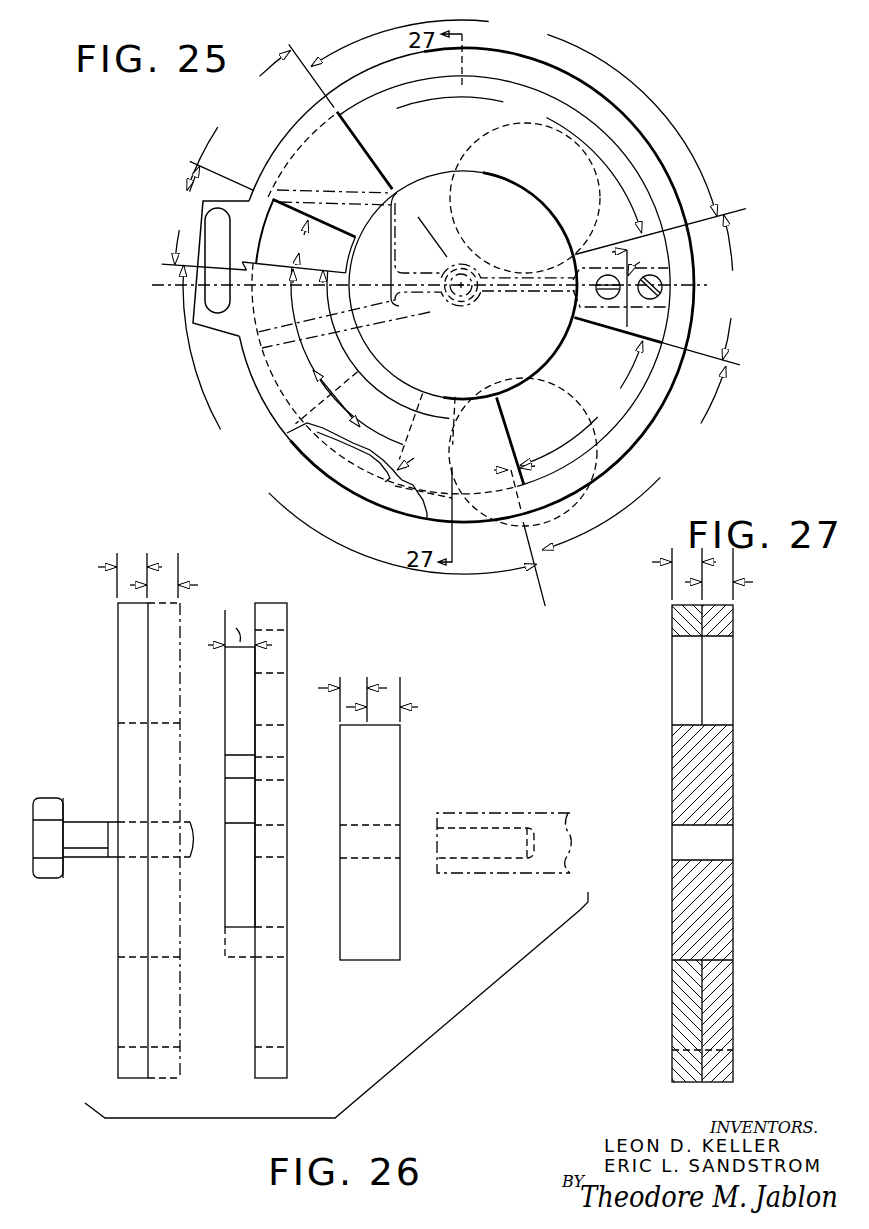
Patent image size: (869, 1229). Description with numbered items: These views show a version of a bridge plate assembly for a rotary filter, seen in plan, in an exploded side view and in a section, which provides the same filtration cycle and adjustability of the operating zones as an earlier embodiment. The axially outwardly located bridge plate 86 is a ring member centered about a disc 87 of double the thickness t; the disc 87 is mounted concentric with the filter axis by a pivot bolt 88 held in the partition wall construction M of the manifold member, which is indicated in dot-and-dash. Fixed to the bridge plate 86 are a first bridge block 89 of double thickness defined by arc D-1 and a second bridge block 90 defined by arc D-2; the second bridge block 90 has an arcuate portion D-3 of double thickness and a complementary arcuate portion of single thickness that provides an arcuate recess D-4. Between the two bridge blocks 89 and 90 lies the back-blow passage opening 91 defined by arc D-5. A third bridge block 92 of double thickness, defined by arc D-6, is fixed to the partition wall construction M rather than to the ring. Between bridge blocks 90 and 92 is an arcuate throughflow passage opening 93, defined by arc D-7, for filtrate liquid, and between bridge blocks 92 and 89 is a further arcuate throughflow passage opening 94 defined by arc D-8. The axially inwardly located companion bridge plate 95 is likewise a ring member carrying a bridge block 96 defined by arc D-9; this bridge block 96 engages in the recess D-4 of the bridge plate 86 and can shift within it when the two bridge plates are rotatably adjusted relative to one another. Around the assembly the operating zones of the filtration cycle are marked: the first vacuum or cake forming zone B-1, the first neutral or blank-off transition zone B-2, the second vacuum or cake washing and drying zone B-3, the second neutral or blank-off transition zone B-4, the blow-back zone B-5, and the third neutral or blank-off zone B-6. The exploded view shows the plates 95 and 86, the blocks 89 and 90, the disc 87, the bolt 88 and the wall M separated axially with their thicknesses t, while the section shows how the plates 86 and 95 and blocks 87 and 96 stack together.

In FIG. 26, the bridge plate 86 is at (278, 647).
In FIG. 27, the bridge plate 86 is at (671, 743).
In FIG. 25, the disc 87 is at (401, 190).
In FIG. 26, the disc 87 is at (398, 763).
In FIG. 27, the disc 87 is at (683, 911).
In FIG. 25, the pivot bolt 88 is at (478, 297).
In FIG. 26, the pivot bolt 88 is at (85, 830).
In FIG. 25, the first bridge block 89 is at (340, 187).
In FIG. 26, the first bridge block 89 is at (237, 690).
In FIG. 25, the second bridge block 90 is at (258, 310).
In FIG. 26, the second bridge block 90 is at (237, 892).
In FIG. 25, the back-blow passage opening 91 is at (316, 270).
In FIG. 25, the third bridge block 92 is at (633, 329).
In FIG. 25, the arcuate throughflow passage opening 93 is at (566, 364).
In FIG. 25, the arcuate throughflow passage opening 94 is at (394, 148).
In FIG. 26, the companion bridge plate 95 is at (120, 628).
In FIG. 27, the companion bridge plate 95 is at (735, 989).
In FIG. 25, the bridge block 96 is at (385, 478).
In FIG. 27, the bridge block 96 is at (704, 1043).
In FIG. 25, the partition wall construction M is at (443, 314).
In FIG. 26, the partition wall construction M is at (507, 813).
In FIG. 25, the first vacuum or cake forming zone B-1 is at (634, 458).
In FIG. 25, the first neutral or blank-off transition zone B-2 is at (737, 287).
In FIG. 25, the second vacuum or cake washing and drying zone B-3 is at (514, 116).
In FIG. 25, the second neutral or blank-off transition zone B-4 is at (239, 120).
In FIG. 25, the blow-back zone B-5 is at (173, 215).
In FIG. 25, the third neutral or blank-off zone B-6 is at (360, 419).
In FIG. 25, the arc D-1 is at (296, 199).
In FIG. 25, the arc D-2 is at (381, 349).
In FIG. 25, the arcuate portion D-3 is at (347, 356).
In FIG. 25, the arcuate recess D-4 is at (424, 457).
In FIG. 25, the arc D-5 is at (303, 251).
In FIG. 25, the arc D-6 is at (639, 258).
In FIG. 25, the arc D-7 is at (581, 403).
In FIG. 25, the arc D-8 is at (519, 162).
In FIG. 25, the arc D-9 is at (499, 479).